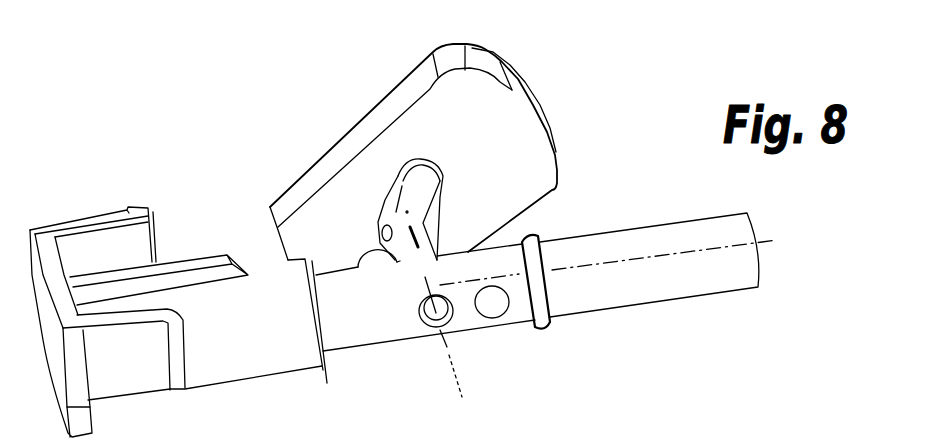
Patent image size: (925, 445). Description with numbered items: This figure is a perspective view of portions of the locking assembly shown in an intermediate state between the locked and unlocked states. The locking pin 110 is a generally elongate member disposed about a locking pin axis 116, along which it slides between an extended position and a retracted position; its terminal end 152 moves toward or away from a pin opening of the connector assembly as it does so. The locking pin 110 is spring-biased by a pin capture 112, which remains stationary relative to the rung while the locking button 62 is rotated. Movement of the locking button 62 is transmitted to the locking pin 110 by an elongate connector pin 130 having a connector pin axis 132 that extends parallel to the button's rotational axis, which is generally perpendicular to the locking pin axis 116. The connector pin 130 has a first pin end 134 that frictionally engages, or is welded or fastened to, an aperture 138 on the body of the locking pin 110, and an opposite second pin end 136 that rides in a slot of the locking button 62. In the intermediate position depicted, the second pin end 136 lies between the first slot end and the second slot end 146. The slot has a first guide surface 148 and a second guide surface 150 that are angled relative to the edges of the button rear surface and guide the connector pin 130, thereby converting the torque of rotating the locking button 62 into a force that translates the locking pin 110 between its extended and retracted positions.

The locking button 62 is at (412, 88).
The locking pin 110 is at (343, 322).
The pin capture 112 is at (255, 278).
The locking pin axis 116 is at (660, 258).
The connector pin 130 is at (426, 229).
The connector pin axis 132 is at (457, 385).
The first pin end 134 is at (423, 307).
The second pin end 136 is at (408, 183).
The aperture 138 is at (437, 328).
The second slot end 146 is at (378, 229).
The first guide surface 148 is at (403, 200).
The second guide surface 150 is at (440, 193).
The terminal end 152 is at (760, 268).